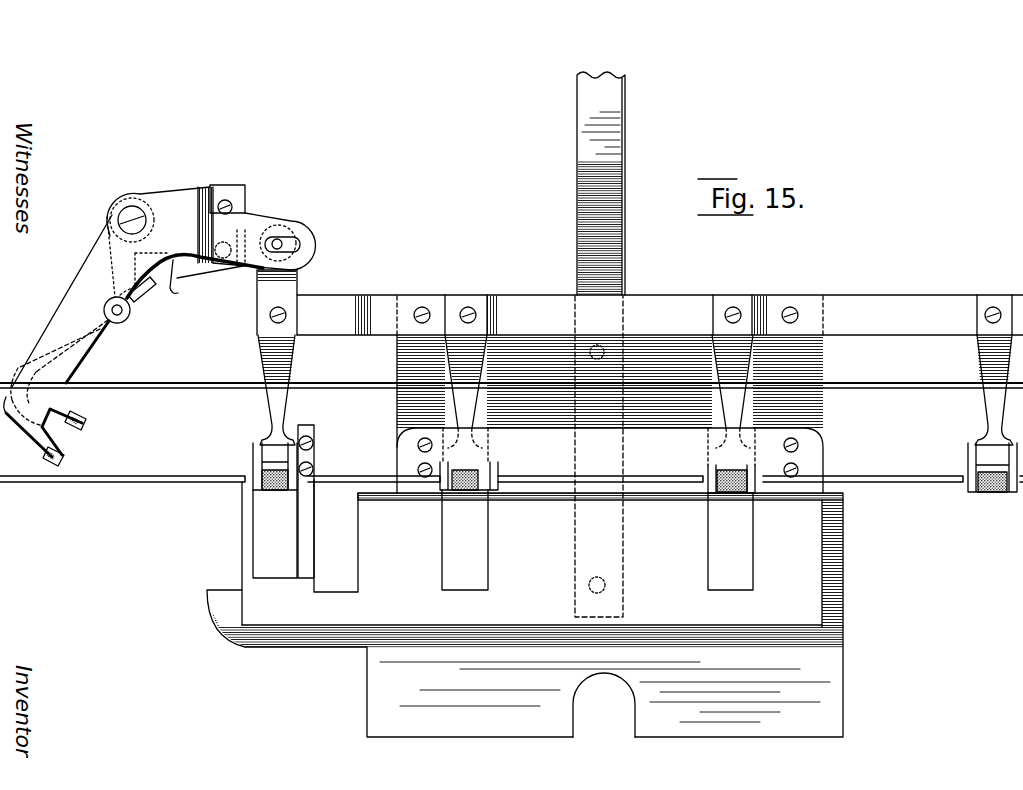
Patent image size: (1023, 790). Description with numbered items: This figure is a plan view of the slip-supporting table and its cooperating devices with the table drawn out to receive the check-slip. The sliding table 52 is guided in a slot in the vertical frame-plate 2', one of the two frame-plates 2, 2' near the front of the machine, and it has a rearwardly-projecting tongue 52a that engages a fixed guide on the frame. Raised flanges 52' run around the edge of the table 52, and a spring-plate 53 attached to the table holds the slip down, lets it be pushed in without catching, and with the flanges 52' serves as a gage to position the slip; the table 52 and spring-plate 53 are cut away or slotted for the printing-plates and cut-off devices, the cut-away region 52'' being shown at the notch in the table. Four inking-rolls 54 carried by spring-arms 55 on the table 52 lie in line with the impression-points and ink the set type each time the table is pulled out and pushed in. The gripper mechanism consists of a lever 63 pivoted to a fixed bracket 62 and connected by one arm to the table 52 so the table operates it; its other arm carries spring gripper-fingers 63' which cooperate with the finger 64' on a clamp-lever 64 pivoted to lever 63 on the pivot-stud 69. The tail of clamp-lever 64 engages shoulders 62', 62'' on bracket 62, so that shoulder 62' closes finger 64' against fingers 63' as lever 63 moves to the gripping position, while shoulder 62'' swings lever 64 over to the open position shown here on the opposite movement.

The vertical frame-plate 2 is at (511, 467).
The vertical frame-plate 2' is at (511, 400).
The sliding table 52 is at (525, 663).
The raised flanges 52' is at (763, 682).
The notch in base plate 52'' is at (531, 717).
The rearwardly-projecting tongue 52a is at (578, 240).
The spring-plate 53 is at (803, 570).
The inking-roll 54 is at (269, 488).
The spring-arm 55 is at (287, 373).
The fixed bracket 62 is at (211, 230).
The shoulder 62' is at (195, 280).
The shoulder 62'' is at (151, 305).
The lever 63 is at (62, 301).
The spring gripper-fingers 63' is at (84, 437).
The clamp-lever 64 is at (27, 398).
The finger 64' is at (58, 392).
The pivot-stud 69 is at (118, 324).